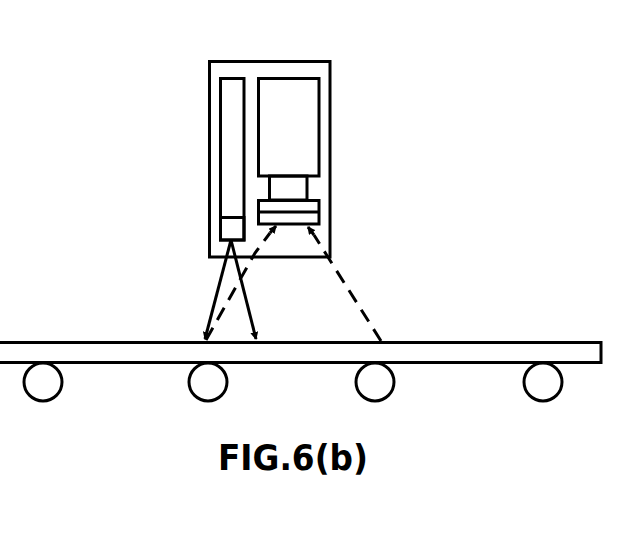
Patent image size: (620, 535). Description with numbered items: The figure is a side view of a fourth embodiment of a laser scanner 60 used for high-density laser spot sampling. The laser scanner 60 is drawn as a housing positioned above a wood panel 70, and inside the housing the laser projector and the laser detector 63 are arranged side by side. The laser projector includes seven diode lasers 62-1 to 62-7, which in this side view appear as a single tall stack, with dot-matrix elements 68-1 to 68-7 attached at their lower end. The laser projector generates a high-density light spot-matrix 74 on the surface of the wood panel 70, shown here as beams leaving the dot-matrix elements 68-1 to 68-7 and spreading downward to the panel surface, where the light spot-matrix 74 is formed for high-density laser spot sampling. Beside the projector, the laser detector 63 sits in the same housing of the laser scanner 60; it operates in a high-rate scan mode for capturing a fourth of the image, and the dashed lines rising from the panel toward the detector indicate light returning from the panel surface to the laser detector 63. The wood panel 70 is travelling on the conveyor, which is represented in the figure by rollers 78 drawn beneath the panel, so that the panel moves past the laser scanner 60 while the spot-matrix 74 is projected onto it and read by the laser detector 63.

The laser scanner 60 is at (330, 90).
The diode laser 62-1 is at (175, 138).
The diode laser 62-7 is at (222, 90).
The laser detector 63 is at (319, 148).
The dot-matrix element 68-1 is at (175, 226).
The dot-matrix element 68-7 is at (234, 229).
The wood panel 70 is at (122, 350).
The high-density light spot-matrix 74 is at (261, 335).
The rollers 78 is at (542, 384).